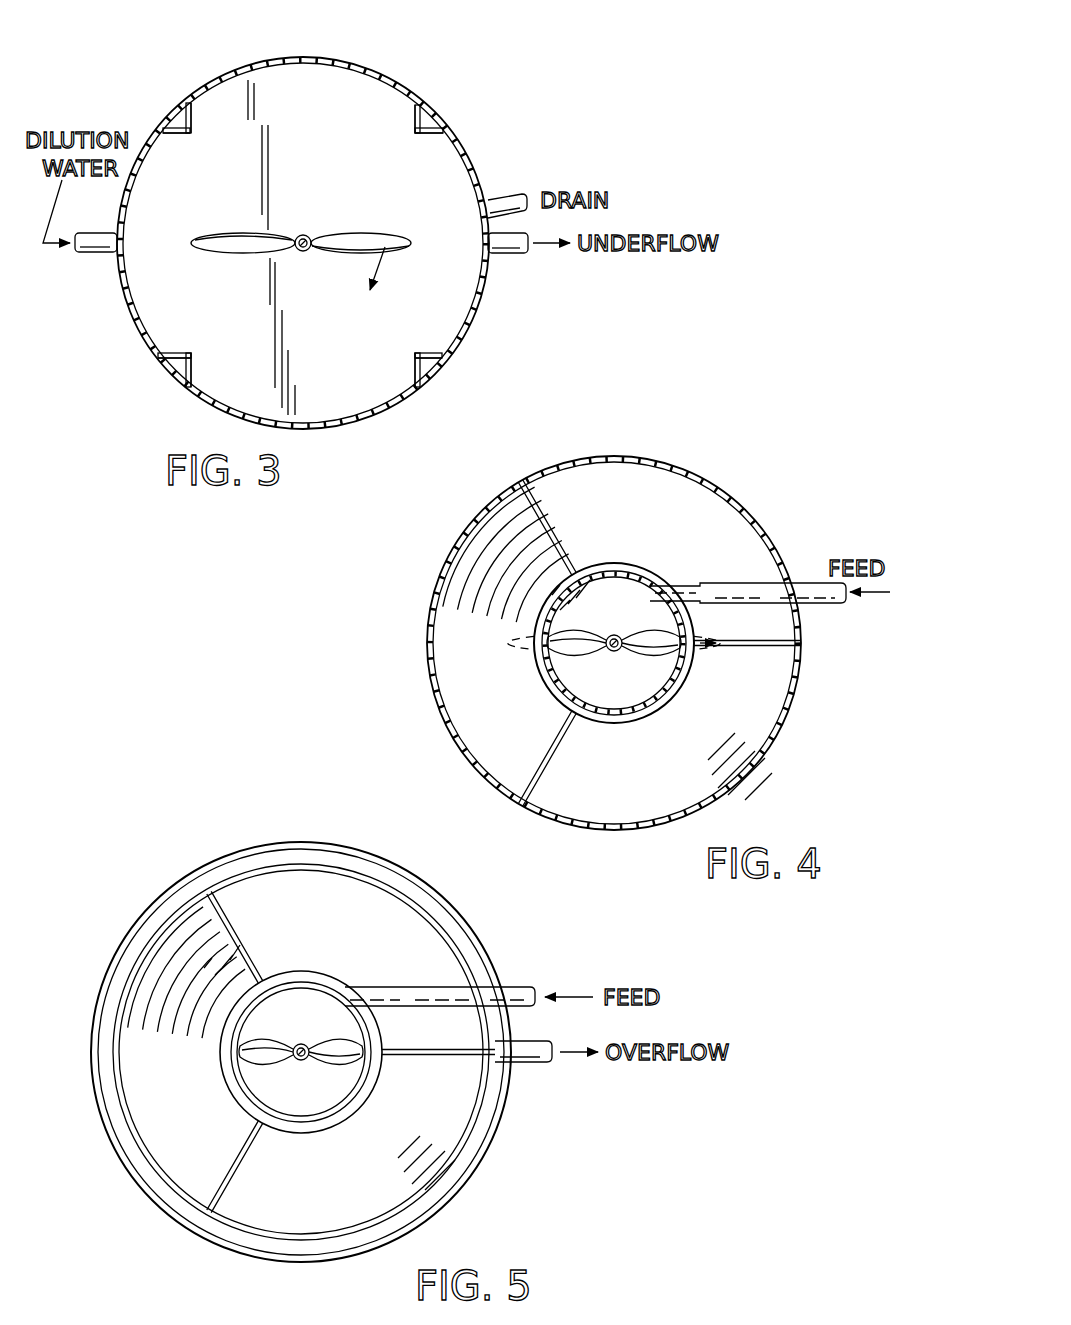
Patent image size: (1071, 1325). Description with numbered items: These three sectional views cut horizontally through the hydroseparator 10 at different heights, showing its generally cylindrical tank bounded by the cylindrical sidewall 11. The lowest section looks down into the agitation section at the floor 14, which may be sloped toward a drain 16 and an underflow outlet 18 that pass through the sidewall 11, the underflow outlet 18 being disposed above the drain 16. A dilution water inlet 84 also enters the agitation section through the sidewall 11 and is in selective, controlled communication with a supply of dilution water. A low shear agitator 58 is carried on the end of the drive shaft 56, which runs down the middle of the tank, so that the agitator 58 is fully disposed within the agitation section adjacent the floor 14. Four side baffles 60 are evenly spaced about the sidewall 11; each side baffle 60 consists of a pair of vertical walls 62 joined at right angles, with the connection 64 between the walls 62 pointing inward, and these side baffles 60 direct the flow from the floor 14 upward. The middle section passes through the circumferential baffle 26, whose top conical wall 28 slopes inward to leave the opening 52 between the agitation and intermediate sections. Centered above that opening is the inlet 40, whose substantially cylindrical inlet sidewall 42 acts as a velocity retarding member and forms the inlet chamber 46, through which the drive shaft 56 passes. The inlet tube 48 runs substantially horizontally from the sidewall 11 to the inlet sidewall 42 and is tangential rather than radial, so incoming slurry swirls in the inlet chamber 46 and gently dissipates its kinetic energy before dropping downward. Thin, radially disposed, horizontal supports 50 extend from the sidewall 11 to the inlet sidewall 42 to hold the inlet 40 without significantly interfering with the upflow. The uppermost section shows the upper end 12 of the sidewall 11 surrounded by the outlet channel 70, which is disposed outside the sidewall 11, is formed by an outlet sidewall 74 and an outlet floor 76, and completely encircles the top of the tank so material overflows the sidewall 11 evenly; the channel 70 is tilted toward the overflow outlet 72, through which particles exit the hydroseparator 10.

In FIG. 3, the hydroseparator 10 is at (326, 214).
In FIG. 4, the hydroseparator 10 is at (559, 643).
In FIG. 5, the hydroseparator 10 is at (275, 1036).
In FIG. 3, the cylindrical sidewall 11 is at (385, 78).
In FIG. 4, the cylindrical sidewall 11 is at (427, 632).
In FIG. 5, the upper end 12 is at (115, 1035).
In FIG. 3, the floor 14 is at (453, 293).
In FIG. 3, the drain 16 is at (500, 205).
In FIG. 3, the underflow outlet 18 is at (505, 250).
In FIG. 4, the circumferential baffle 26 is at (560, 795).
In FIG. 5, the circumferential baffle 26 is at (385, 1190).
In FIG. 4, the top conical wall 28 is at (620, 800).
In FIG. 5, the top conical wall 28 is at (432, 1138).
In FIG. 4, the inlet 40 is at (672, 690).
In FIG. 5, the inlet 40 is at (318, 1122).
In FIG. 4, the inlet sidewall 42 is at (620, 715).
In FIG. 5, the inlet sidewall 42 is at (242, 1094).
In FIG. 4, the inlet chamber 46 is at (565, 618).
In FIG. 5, the inlet chamber 46 is at (258, 1017).
In FIG. 4, the inlet tube 48 is at (745, 590).
In FIG. 5, the inlet tube 48 is at (382, 993).
In FIG. 4, the supports 50 is at (540, 517).
In FIG. 5, the supports 50 is at (232, 928).
In FIG. 4, the opening 52 is at (620, 563).
In FIG. 5, the opening 52 is at (305, 972).
In FIG. 3, the drive shaft 56 is at (305, 235).
In FIG. 4, the drive shaft 56 is at (614, 636).
In FIG. 5, the drive shaft 56 is at (302, 1045).
In FIG. 3, the low shear agitator 58 is at (340, 247).
In FIG. 4, the low shear agitator 58 is at (567, 655).
In FIG. 5, the low shear agitator 58 is at (250, 1057).
In FIG. 3, the side baffles 60 is at (188, 138).
In FIG. 3, the vertical walls 62 is at (193, 117).
In FIG. 3, the connection 64 is at (191, 133).
In FIG. 5, the outlet channel 70 is at (118, 1155).
In FIG. 5, the overflow outlet 72 is at (512, 1052).
In FIG. 5, the outlet sidewall 74 is at (140, 1187).
In FIG. 5, the outlet floor 76 is at (108, 1085).
In FIG. 3, the dilution water inlet 84 is at (100, 249).